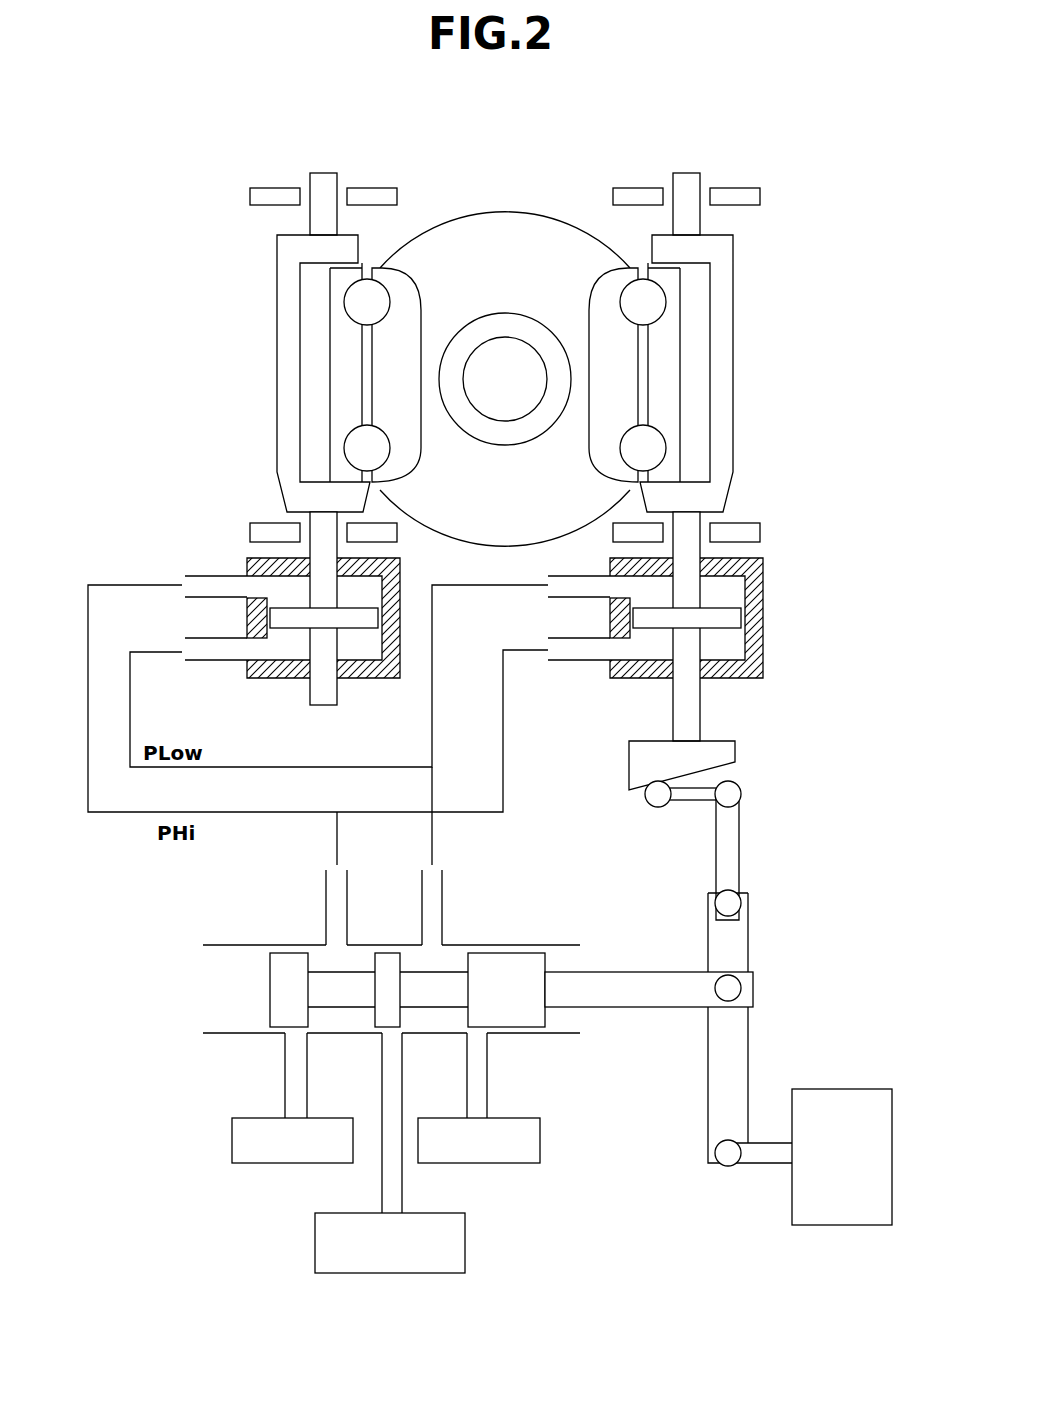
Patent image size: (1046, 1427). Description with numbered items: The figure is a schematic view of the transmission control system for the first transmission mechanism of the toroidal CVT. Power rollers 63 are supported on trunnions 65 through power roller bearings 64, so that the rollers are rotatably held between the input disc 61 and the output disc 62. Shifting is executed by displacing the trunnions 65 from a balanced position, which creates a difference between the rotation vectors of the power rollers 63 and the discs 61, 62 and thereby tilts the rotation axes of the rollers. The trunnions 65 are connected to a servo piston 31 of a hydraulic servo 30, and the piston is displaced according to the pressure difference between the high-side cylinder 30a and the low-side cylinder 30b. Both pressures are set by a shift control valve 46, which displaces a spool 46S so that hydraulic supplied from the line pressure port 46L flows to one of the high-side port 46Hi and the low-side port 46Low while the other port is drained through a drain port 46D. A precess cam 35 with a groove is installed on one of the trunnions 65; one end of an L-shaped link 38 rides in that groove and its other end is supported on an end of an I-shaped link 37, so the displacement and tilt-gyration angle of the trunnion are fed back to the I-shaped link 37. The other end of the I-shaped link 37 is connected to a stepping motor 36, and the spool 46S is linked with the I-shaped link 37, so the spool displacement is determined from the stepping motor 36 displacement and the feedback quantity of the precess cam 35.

The hydraulic servo 30 is at (465, 609).
The high-side cylinder 30a is at (270, 588).
The low-side cylinder 30b is at (270, 645).
The servo piston 31 is at (302, 637).
The precess cam 35 is at (723, 752).
The stepping motor 36 is at (847, 1100).
The I-shaped link 37 is at (725, 1060).
The L-shaped link 38 is at (732, 845).
The shift control valve 46 is at (379, 1071).
The high-side port 46Hi is at (337, 940).
The low-side port 46Low is at (432, 942).
The drain port 46D is at (290, 1040).
The line pressure port 46L is at (386, 1040).
The spool 46S is at (540, 998).
The input disc 61 is at (532, 190).
The output disc 62 is at (519, 278).
The power roller 63 is at (400, 311).
The power roller bearing 64 is at (357, 448).
The trunnion 65 is at (268, 392).